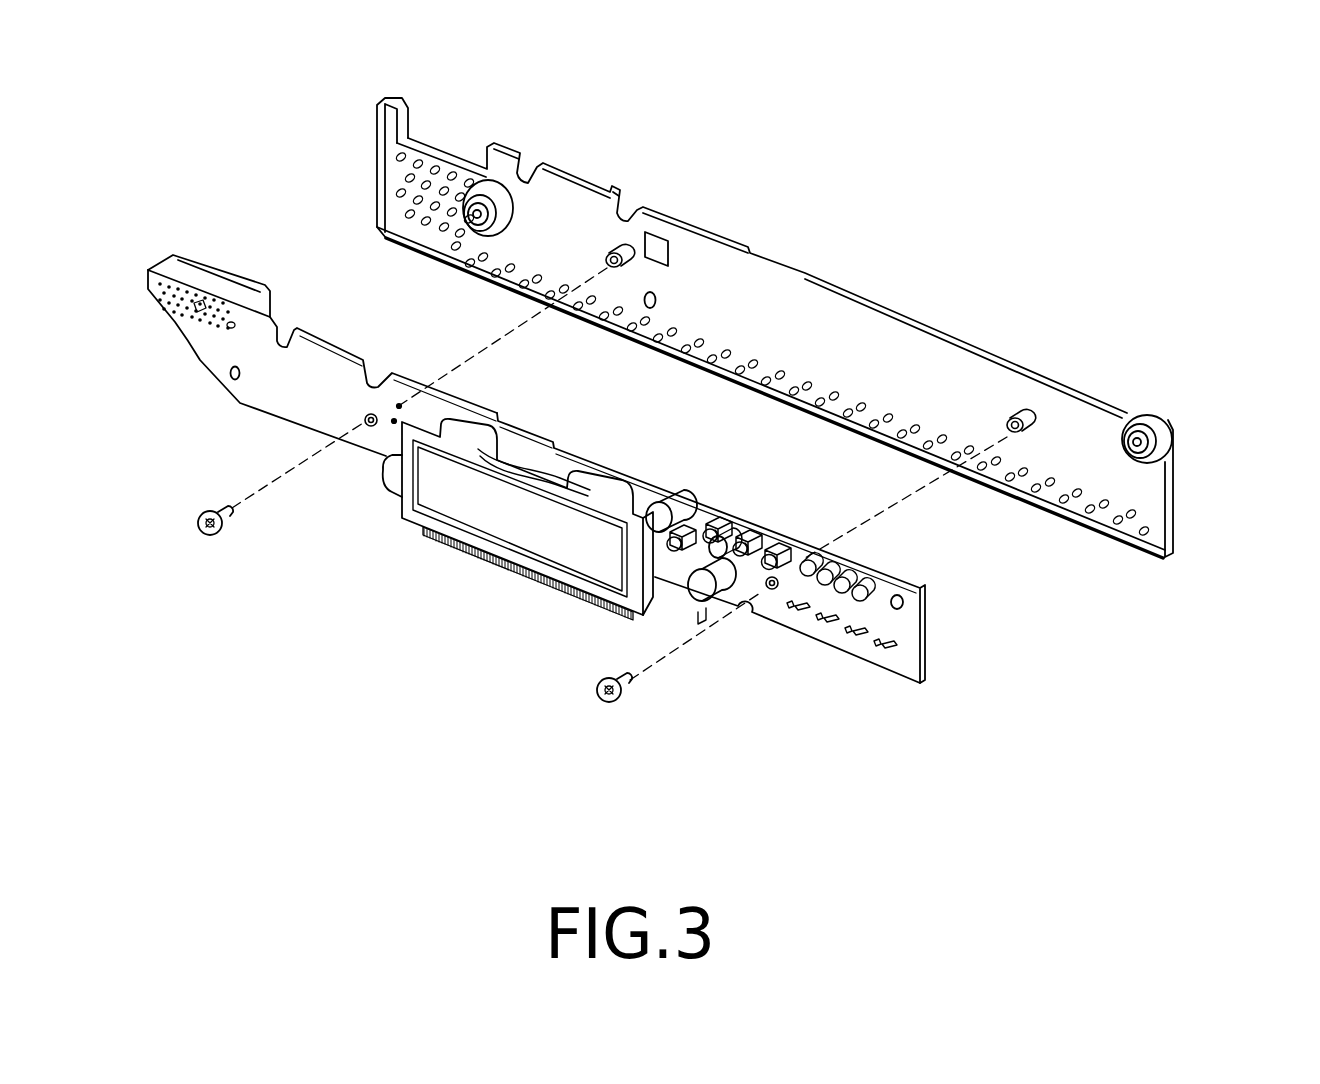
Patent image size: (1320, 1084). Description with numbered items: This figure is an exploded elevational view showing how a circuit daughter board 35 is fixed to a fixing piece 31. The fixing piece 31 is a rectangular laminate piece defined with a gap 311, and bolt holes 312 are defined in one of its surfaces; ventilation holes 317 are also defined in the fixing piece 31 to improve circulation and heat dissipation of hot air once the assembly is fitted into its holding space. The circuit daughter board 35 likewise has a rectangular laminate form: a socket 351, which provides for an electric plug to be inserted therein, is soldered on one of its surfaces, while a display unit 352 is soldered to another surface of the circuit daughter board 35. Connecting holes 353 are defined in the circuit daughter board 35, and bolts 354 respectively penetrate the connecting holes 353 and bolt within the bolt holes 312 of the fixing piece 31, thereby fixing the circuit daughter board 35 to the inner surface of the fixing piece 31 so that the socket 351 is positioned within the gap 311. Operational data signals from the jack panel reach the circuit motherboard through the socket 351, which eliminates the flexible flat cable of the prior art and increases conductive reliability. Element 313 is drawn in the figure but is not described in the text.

The fixing piece 31 is at (948, 355).
The gap 311 is at (440, 125).
The bolt holes 312 is at (610, 254).
The rivet 313 is at (478, 216).
The ventilation holes 317 is at (1098, 515).
The circuit daughter board 35 is at (915, 625).
The socket 351 is at (222, 268).
The display unit 352 is at (607, 570).
The connecting holes 353 is at (364, 424).
The bolts 354 is at (206, 516).